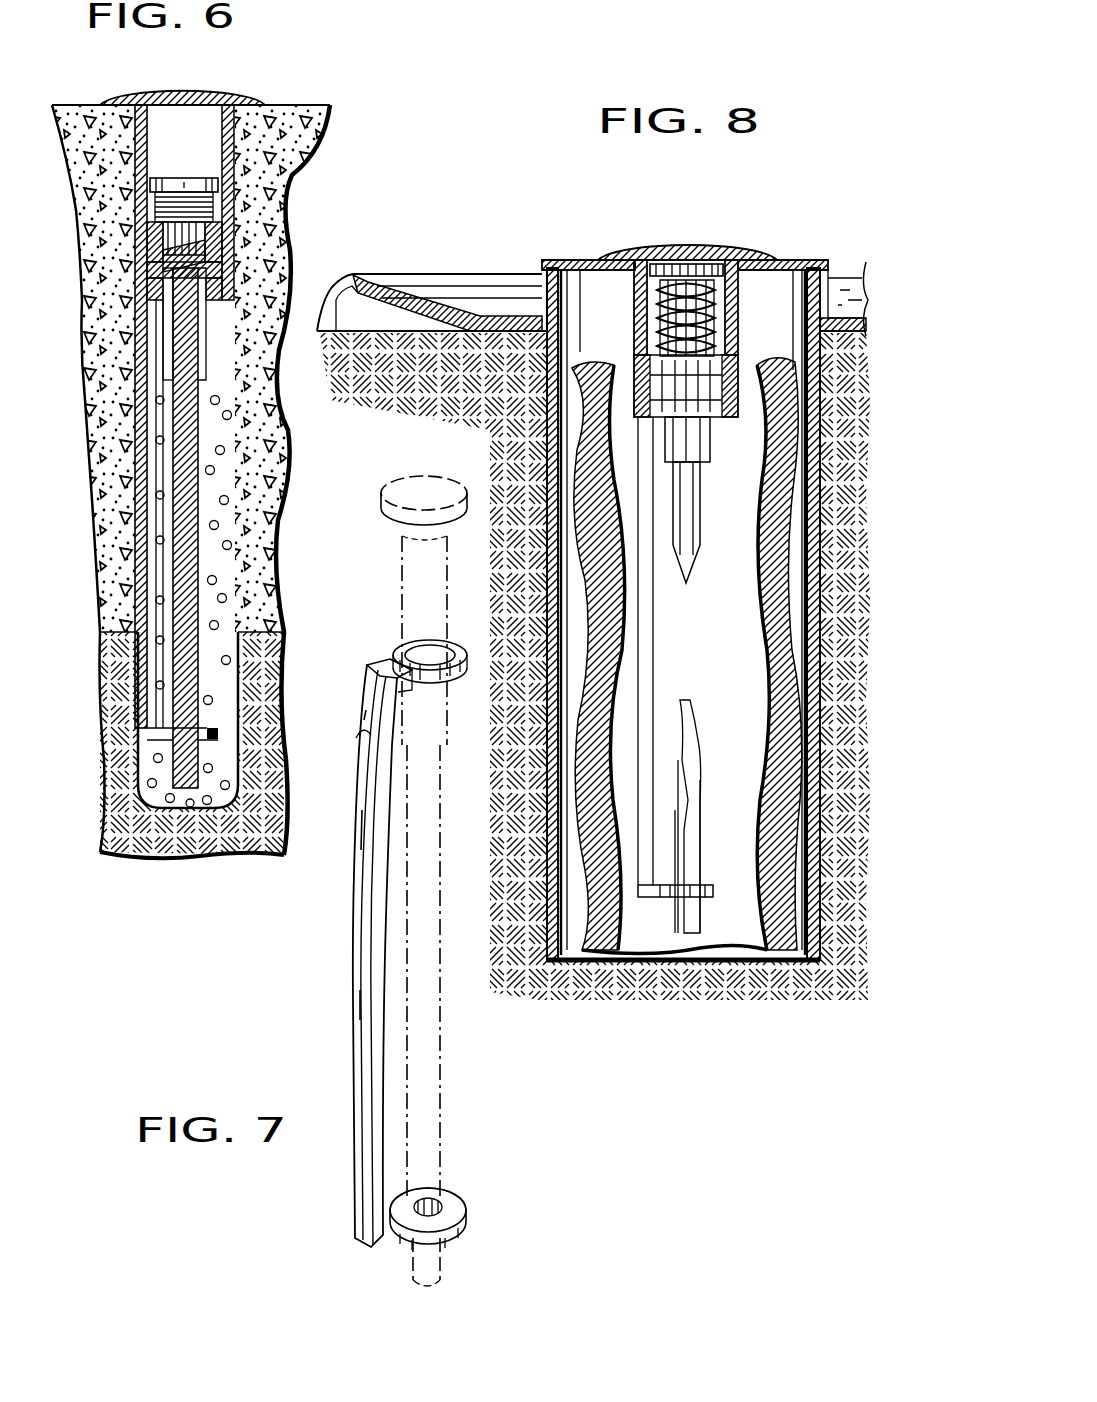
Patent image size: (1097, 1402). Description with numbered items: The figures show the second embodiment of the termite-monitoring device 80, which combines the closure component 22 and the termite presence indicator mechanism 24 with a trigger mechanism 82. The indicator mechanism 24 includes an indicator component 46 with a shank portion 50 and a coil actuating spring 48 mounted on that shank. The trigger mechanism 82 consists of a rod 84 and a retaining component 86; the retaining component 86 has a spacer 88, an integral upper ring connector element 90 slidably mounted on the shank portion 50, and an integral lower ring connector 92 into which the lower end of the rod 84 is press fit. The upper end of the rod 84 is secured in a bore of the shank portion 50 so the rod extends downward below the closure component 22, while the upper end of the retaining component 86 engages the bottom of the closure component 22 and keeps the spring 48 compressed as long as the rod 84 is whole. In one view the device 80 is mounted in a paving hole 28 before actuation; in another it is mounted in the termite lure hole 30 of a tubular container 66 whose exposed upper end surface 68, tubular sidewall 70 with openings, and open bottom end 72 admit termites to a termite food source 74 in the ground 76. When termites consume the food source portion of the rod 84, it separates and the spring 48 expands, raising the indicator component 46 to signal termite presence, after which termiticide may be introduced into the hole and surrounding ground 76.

In FIG. 6, the closure component 22 is at (137, 98).
In FIG. 8, the closure component 22 is at (672, 242).
In FIG. 6, the termite presence indicator mechanism 24 is at (200, 178).
In FIG. 8, the termite presence indicator mechanism 24 is at (718, 320).
In FIG. 6, the paving hole 28 is at (232, 505).
In FIG. 8, the termite lure hole 30 is at (632, 262).
In FIG. 6, the indicator component 46 is at (195, 243).
In FIG. 8, the indicator component 46 is at (655, 330).
In FIG. 7, the indicator component 46 is at (405, 595).
In FIG. 6, the coil actuating spring 48 is at (155, 205).
In FIG. 8, the coil actuating spring 48 is at (712, 300).
In FIG. 6, the shank portion 50 is at (205, 350).
In FIG. 8, the shank portion 50 is at (705, 448).
In FIG. 8, the tubular container 66 is at (545, 645).
In FIG. 8, the upper end surface 68 is at (560, 258).
In FIG. 8, the tubular sidewall 70 is at (826, 880).
In FIG. 8, the open bottom end 72 is at (590, 968).
In FIG. 6, the termite food source 74 is at (150, 762).
In FIG. 8, the termite food source 74 is at (792, 750).
In FIG. 6, the ground 76 is at (118, 852).
In FIG. 8, the ground 76 is at (794, 970).
In FIG. 6, the termite-monitoring device 80 is at (258, 78).
In FIG. 8, the termite-monitoring device 80 is at (748, 198).
In FIG. 6, the trigger mechanism 82 is at (120, 533).
In FIG. 8, the trigger mechanism 82 is at (625, 595).
In FIG. 7, the trigger mechanism 82 is at (332, 990).
In FIG. 6, the rod 84 is at (200, 427).
In FIG. 8, the rod 84 is at (690, 520).
In FIG. 7, the rod 84 is at (452, 1050).
In FIG. 6, the retaining component 86 is at (140, 580).
In FIG. 8, the retaining component 86 is at (638, 700).
In FIG. 7, the retaining component 86 is at (352, 1042).
In FIG. 6, the spacer 88 is at (160, 455).
In FIG. 8, the spacer 88 is at (655, 625).
In FIG. 7, the spacer 88 is at (358, 876).
In FIG. 6, the upper ring connector element 90 is at (230, 282).
In FIG. 8, the upper ring connector element 90 is at (705, 425).
In FIG. 7, the upper ring connector element 90 is at (462, 672).
In FIG. 6, the lower ring connector 92 is at (222, 758).
In FIG. 8, the lower ring connector 92 is at (705, 900).
In FIG. 7, the lower ring connector 92 is at (468, 1222).